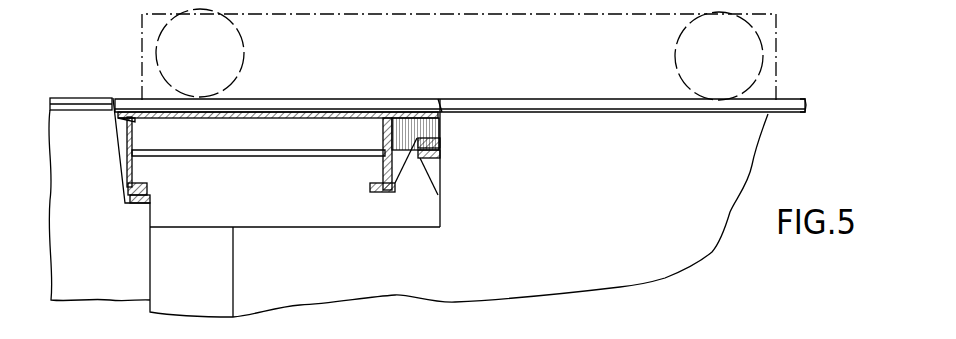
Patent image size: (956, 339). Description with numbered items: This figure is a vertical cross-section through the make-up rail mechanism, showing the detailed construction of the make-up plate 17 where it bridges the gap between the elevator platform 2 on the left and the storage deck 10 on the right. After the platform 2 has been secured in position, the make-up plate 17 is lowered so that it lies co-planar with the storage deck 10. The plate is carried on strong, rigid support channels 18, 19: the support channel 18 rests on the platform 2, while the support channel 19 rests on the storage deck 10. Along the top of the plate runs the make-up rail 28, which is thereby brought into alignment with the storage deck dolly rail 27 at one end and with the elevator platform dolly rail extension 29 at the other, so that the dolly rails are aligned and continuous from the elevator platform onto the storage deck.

The platform 2 is at (87, 265).
The storage deck 10 is at (603, 219).
The make-up plate 17 is at (130, 99).
The support channel 18 is at (128, 175).
The support channel 19 is at (441, 131).
The storage deck dolly rail 27 is at (795, 99).
The make-up rail 28 is at (295, 99).
The elevator platform dolly rail extension 29 is at (73, 99).